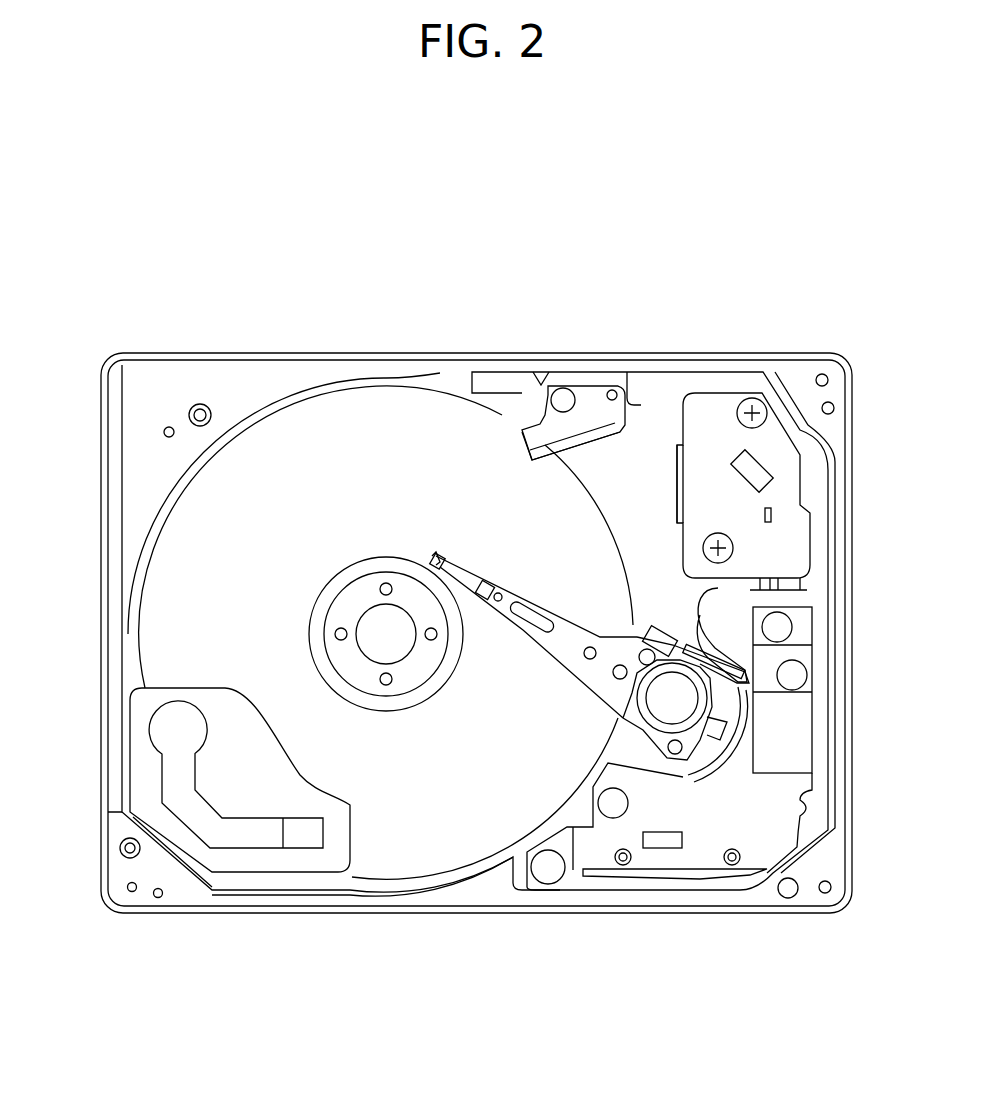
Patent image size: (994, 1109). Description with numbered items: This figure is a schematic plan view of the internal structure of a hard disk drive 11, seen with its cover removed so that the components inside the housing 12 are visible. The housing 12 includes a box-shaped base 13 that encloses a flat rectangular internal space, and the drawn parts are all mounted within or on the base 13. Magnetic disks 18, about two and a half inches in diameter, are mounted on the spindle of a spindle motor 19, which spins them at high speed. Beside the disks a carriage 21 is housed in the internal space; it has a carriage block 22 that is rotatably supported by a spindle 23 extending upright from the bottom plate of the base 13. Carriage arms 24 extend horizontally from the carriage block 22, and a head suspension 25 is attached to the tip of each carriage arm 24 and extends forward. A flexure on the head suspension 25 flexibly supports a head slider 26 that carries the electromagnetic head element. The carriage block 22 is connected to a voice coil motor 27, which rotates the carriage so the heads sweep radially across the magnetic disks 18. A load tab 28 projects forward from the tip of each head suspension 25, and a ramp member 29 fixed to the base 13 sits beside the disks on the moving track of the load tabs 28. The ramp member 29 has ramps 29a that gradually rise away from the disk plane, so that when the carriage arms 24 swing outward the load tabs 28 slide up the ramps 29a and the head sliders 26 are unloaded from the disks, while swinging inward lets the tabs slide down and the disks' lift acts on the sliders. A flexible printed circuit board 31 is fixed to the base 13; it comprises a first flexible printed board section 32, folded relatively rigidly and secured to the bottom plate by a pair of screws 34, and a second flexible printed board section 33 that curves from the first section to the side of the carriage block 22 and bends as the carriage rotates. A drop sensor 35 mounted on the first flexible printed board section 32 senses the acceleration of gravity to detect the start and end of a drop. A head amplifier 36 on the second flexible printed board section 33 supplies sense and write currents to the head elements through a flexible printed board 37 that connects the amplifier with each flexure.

The hard disk drive 11 is at (187, 343).
The housing 12 is at (354, 352).
The base 13 is at (104, 508).
The magnetic disk 18 is at (128, 603).
The spindle motor 19 is at (368, 655).
The carriage 21 is at (548, 662).
The carriage block 22 is at (625, 720).
The spindle 23 is at (678, 727).
The carriage arm 24 is at (533, 640).
The head suspension 25 is at (482, 583).
The head slider 26 is at (437, 561).
The voice coil motor 27 is at (662, 868).
The load tab 28 is at (434, 558).
The ramp member 29 is at (588, 386).
The ramp 29a is at (533, 460).
The flexible printed circuit board 31 is at (817, 537).
The first flexible printed board section 32 is at (678, 496).
The second flexible printed board section 33 is at (717, 590).
The screw 34 is at (757, 405).
The drop sensor 35 is at (748, 480).
The head amplifier 36 is at (696, 623).
The flexible printed board 37 is at (660, 677).